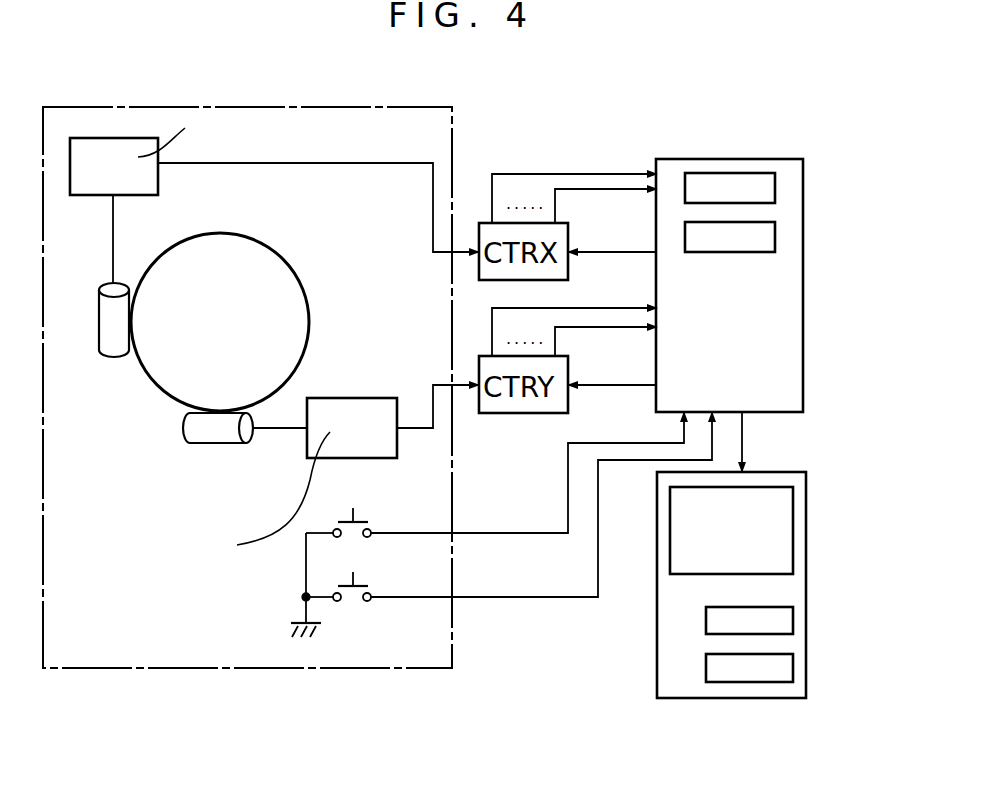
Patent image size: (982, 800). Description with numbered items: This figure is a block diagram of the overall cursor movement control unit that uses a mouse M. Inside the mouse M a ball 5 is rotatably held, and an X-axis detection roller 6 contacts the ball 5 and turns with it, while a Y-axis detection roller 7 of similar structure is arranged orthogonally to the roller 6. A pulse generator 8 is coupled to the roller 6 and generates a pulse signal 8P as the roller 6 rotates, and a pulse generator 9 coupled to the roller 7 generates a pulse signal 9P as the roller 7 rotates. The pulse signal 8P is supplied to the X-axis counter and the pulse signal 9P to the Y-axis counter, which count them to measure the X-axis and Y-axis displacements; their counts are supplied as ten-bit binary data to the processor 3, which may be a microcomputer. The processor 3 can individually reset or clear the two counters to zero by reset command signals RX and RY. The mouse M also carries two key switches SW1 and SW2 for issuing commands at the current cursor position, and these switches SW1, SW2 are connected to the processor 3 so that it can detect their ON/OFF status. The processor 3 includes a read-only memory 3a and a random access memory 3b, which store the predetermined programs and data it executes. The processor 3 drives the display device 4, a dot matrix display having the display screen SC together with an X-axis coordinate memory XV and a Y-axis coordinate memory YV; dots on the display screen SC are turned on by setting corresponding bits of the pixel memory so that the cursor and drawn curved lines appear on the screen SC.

The mouse M is at (92, 107).
The pulse generator 8 is at (88, 197).
The pulse signal 8P is at (307, 165).
The X-axis detection roller 6 is at (99, 329).
The ball 5 is at (303, 283).
The Y-axis detection roller 7 is at (218, 443).
The pulse generator 9 is at (352, 398).
The pulse signal 9P is at (417, 427).
The key switch SW1 is at (360, 515).
The key switch SW2 is at (360, 579).
The reset command signal RX is at (612, 237).
The reset command signal RY is at (612, 368).
The processor 3 is at (757, 159).
The read-only memory (ROM) 3a is at (775, 188).
The random access memory (RAM) 3b is at (775, 237).
The display device 4 is at (657, 658).
The display screen SC is at (793, 530).
The X-axis coordinate memory XV is at (793, 620).
The Y-axis coordinate memory YV is at (793, 672).